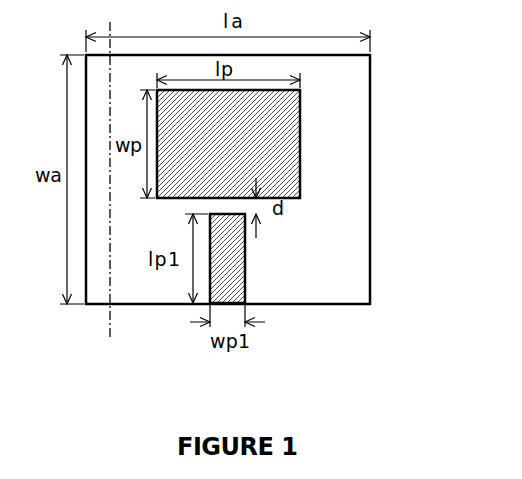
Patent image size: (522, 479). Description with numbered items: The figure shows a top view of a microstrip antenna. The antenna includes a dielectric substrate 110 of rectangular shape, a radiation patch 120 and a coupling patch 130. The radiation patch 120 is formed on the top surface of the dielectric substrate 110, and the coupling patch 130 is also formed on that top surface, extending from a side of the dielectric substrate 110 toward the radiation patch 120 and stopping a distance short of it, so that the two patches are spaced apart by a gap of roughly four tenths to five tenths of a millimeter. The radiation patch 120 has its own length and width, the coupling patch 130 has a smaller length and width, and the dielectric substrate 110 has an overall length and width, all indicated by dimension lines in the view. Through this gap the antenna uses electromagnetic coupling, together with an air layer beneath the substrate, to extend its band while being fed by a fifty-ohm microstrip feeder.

The dielectric substrate 110 is at (371, 143).
The radiation patch 120 is at (300, 195).
The coupling patch 130 is at (245, 280).